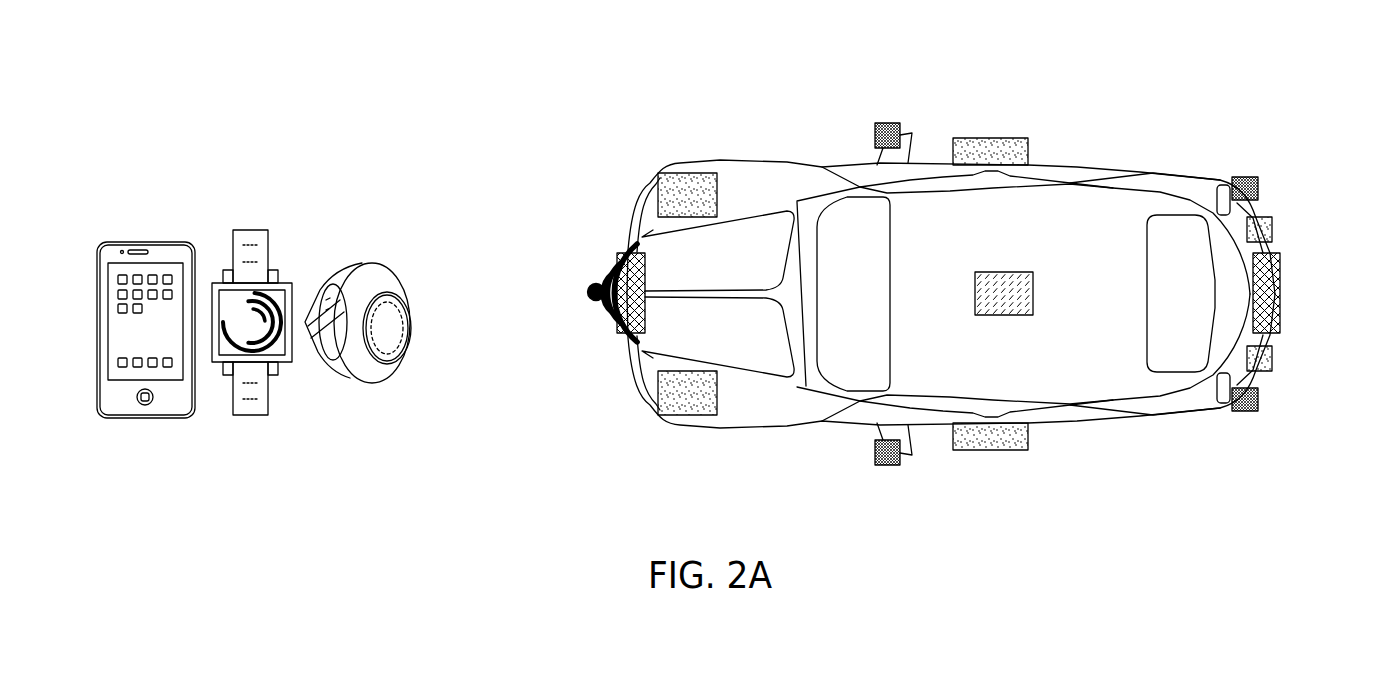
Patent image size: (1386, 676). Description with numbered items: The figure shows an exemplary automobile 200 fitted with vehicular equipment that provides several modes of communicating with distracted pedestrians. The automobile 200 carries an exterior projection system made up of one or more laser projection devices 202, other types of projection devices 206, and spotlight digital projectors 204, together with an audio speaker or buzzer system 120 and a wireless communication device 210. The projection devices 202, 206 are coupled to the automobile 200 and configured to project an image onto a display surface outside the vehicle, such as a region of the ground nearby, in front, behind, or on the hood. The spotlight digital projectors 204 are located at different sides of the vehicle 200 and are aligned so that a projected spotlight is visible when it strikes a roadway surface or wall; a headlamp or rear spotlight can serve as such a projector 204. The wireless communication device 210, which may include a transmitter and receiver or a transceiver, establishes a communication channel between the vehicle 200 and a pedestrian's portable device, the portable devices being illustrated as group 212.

The automobile 200 is at (1180, 77).
The laser projection device 202 is at (617, 327).
The spotlight digital projector 204 is at (997, 138).
The projection device 206 is at (887, 123).
The audio speaker or buzzer system 120 is at (1272, 358).
The wireless communication device 210 is at (595, 273).
The mobile devices 212 is at (413, 220).